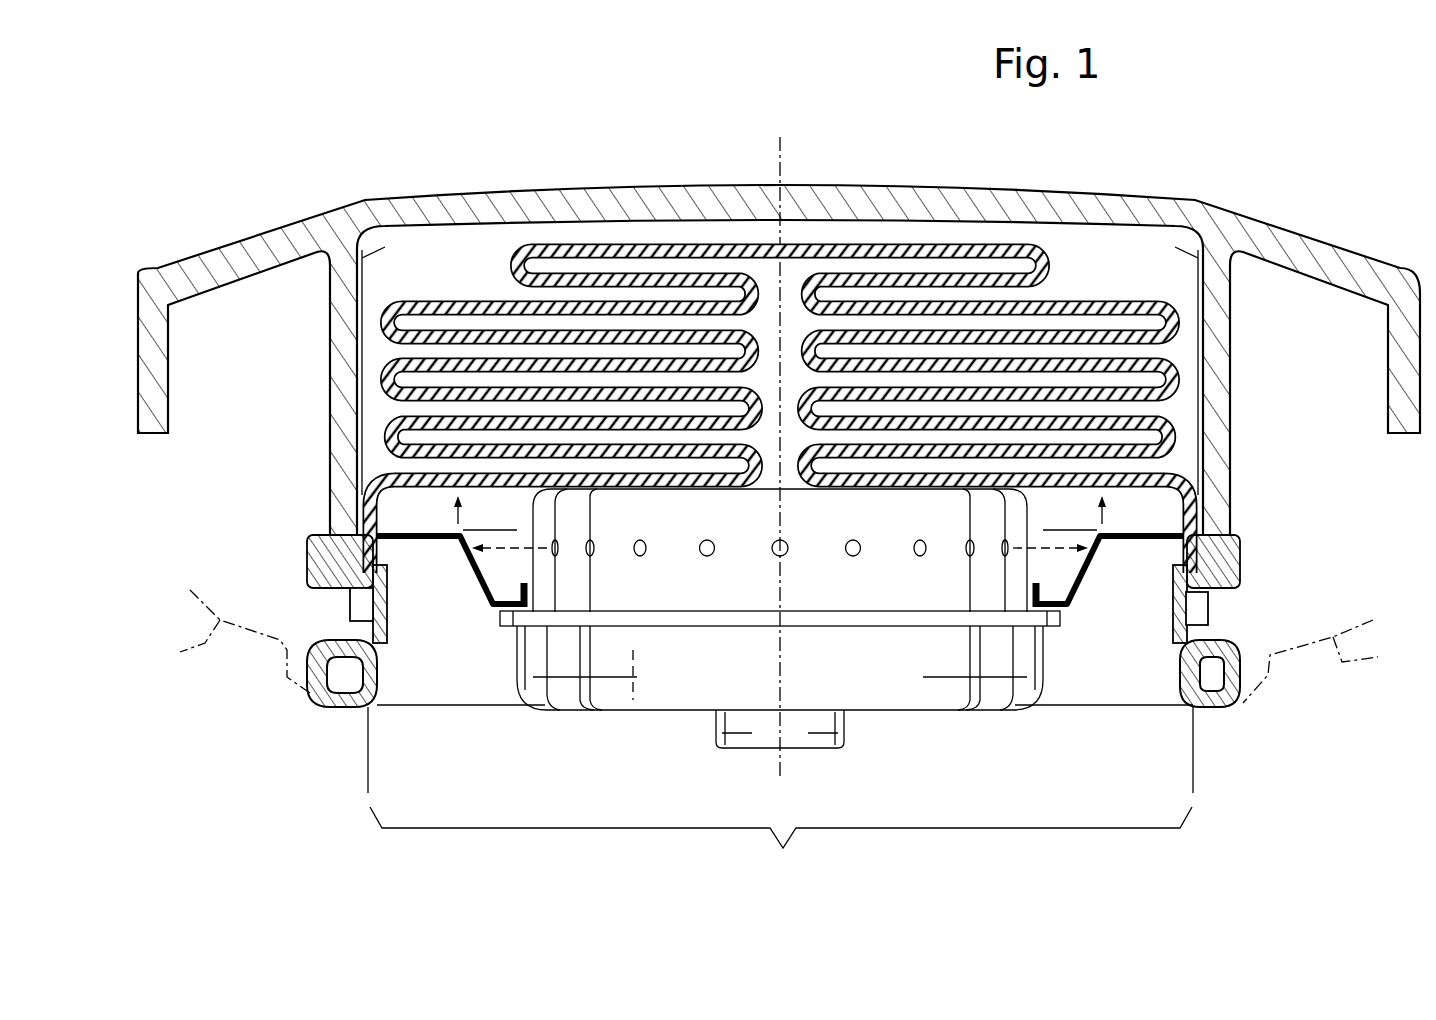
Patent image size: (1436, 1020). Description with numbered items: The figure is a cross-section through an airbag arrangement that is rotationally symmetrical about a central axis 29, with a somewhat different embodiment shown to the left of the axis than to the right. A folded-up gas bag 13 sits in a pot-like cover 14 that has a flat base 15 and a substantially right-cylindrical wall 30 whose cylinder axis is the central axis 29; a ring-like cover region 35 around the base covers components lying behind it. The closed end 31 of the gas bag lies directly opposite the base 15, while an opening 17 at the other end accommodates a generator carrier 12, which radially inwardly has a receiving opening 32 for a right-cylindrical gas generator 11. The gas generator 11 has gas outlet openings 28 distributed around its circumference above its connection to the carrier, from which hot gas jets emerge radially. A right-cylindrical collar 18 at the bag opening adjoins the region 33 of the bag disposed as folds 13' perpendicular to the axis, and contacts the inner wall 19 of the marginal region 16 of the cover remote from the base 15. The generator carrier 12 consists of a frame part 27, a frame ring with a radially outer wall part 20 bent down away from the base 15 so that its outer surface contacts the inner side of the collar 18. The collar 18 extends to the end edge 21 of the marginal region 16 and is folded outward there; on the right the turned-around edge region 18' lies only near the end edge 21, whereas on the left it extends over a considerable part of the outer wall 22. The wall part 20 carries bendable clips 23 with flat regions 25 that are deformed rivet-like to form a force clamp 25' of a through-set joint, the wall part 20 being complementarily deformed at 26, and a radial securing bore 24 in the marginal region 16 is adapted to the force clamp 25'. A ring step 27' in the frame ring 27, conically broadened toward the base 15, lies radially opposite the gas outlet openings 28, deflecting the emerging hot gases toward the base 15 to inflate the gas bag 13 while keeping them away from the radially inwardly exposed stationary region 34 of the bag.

The gas generator 11 is at (780, 631).
The generator carrier 12 is at (1135, 520).
The gas bag 13 is at (824, 331).
The folds 13' is at (780, 404).
The pot-like cover 14 is at (779, 317).
The base 15 is at (618, 198).
The marginal region 16 is at (292, 682).
The opening 17 is at (780, 795).
The edge region or collar 18 is at (773, 695).
The turned around edge region 18' is at (744, 632).
The inner wall 19 is at (328, 498).
The wall part 20 is at (386, 665).
The end edge 21 is at (340, 692).
The outer wall 22 is at (335, 522).
The bendable clip 23 is at (298, 563).
The radial securing bore 24 is at (380, 553).
The flat regions 25 is at (780, 639).
The force clamp 25' is at (793, 592).
The complementary deformation 26 is at (388, 628).
The frame part 27 is at (767, 621).
The ring step 27' is at (796, 610).
The gas outlet openings 28 is at (597, 545).
The central axis 29 is at (782, 150).
The wall 30 is at (1225, 340).
The closed end 31 is at (780, 343).
The receiving opening 32 is at (1012, 578).
The region 33 is at (365, 356).
The stationary region 34 is at (383, 497).
The ring-like cover region 35 is at (215, 248).